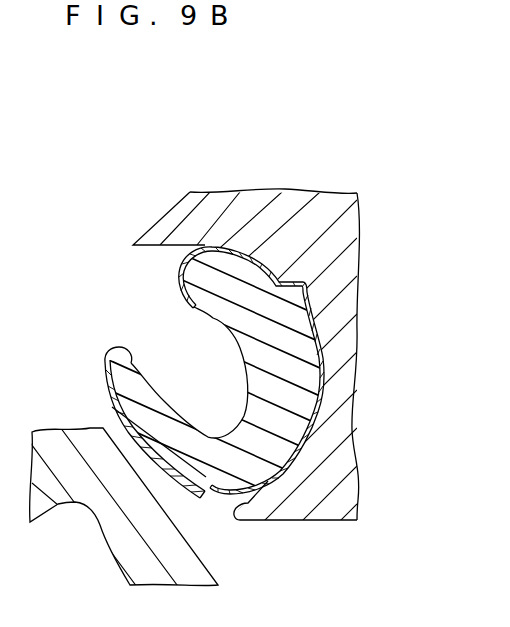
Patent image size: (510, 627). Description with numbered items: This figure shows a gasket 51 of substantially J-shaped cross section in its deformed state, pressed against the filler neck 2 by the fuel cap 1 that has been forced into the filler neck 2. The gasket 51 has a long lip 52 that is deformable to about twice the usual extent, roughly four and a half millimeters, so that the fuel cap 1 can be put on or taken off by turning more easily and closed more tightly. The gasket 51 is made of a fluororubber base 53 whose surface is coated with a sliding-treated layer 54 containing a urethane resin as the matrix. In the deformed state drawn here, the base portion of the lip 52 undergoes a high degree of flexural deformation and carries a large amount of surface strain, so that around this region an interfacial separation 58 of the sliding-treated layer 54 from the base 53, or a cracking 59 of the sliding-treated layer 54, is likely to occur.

The fuel cap 1 is at (157, 222).
The filler neck 2 is at (123, 552).
The gasket 51 is at (166, 294).
The lip 52 is at (147, 405).
The fluororubber base 53 is at (187, 432).
The sliding-treated layer 54 is at (106, 406).
The interfacial separation 58 is at (220, 510).
The cracking 59 is at (262, 510).